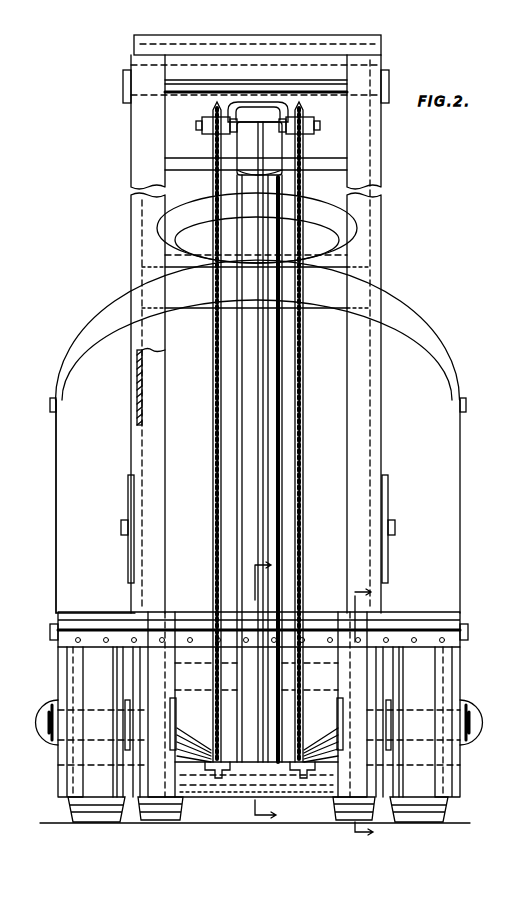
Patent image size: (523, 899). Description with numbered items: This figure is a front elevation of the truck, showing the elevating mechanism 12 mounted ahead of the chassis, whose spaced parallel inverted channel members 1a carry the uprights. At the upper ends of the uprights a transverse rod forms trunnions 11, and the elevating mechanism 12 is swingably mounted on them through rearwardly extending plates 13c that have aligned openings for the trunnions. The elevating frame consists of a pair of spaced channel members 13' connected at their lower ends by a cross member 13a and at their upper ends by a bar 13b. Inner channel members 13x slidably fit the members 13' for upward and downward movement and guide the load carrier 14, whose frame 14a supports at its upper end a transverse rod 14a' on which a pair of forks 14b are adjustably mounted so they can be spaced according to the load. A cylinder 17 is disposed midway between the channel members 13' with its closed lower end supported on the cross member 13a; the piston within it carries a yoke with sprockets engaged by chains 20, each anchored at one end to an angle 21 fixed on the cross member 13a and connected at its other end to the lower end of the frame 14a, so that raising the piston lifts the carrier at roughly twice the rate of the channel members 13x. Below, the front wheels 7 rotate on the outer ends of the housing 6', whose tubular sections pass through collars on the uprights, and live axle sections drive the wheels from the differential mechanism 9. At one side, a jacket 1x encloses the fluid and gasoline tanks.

The bar 13b is at (190, 88).
The channel members 13' is at (248, 334).
The channel members 13x is at (158, 390).
The elevating mechanism 12 is at (404, 463).
The jacket 1x is at (57, 505).
The cylinder 17 is at (270, 367).
The chains 20 is at (300, 400).
The plates 13c is at (388, 480).
The trunnions 11 is at (122, 525).
The transverse rod 14a' is at (259, 617).
The front wheels 7 is at (68, 813).
The frame 14a is at (278, 722).
The load carrier 14 is at (177, 700).
The forks 14b is at (338, 672).
The housing 6' is at (257, 712).
The angle 21 is at (256, 792).
The cross member 13a is at (286, 796).
The differential mechanism 9 is at (256, 690).
The channel members 1a is at (365, 594).